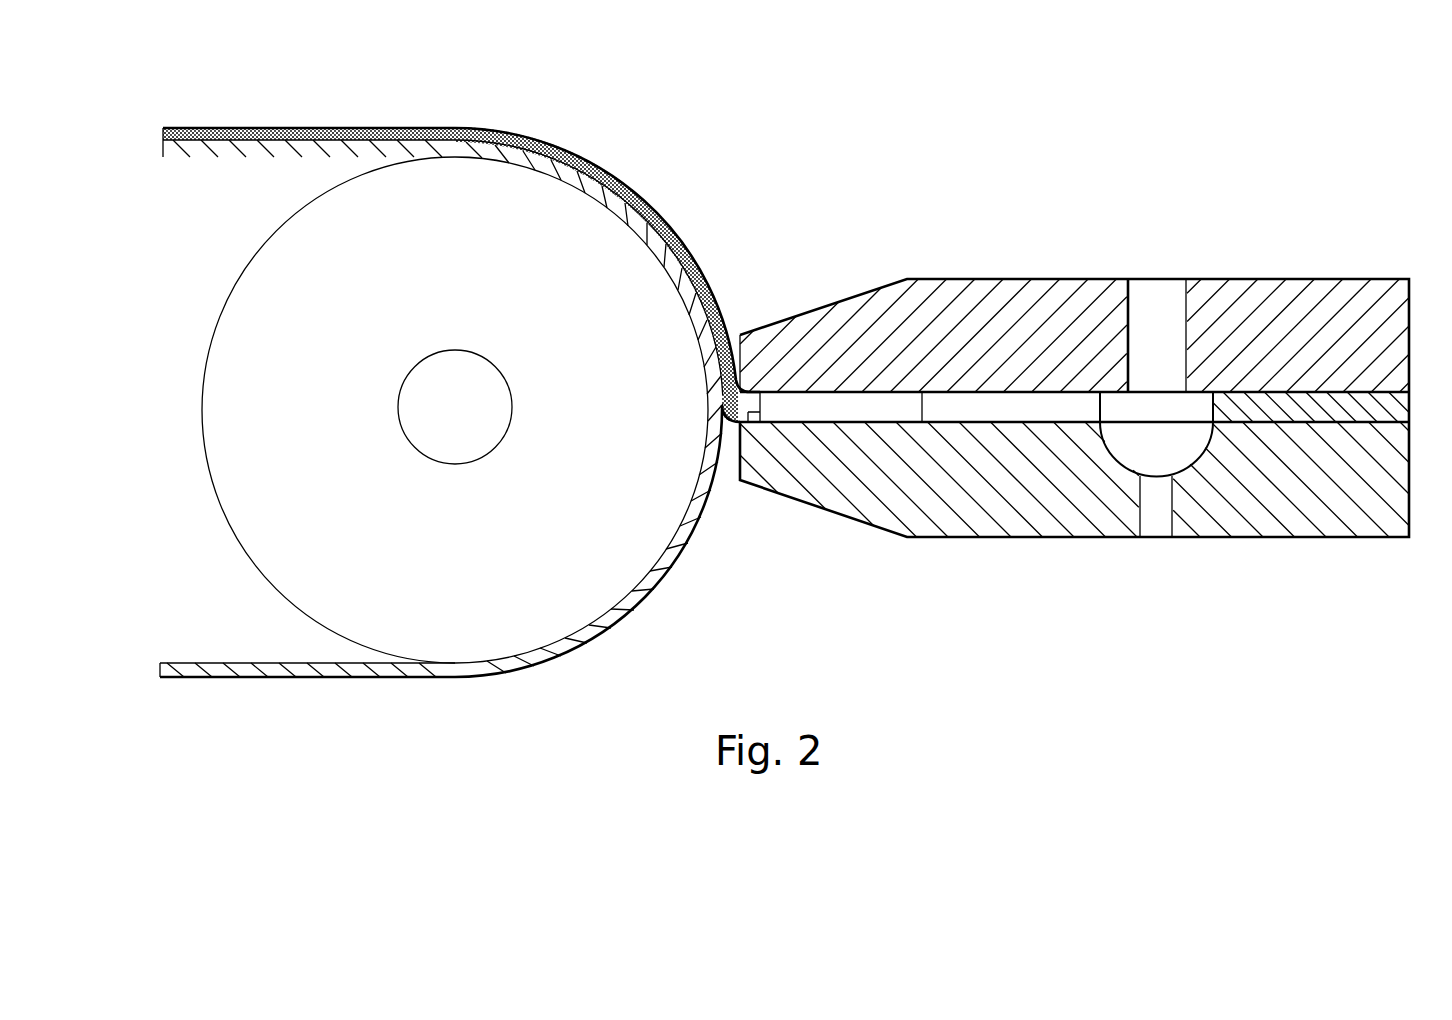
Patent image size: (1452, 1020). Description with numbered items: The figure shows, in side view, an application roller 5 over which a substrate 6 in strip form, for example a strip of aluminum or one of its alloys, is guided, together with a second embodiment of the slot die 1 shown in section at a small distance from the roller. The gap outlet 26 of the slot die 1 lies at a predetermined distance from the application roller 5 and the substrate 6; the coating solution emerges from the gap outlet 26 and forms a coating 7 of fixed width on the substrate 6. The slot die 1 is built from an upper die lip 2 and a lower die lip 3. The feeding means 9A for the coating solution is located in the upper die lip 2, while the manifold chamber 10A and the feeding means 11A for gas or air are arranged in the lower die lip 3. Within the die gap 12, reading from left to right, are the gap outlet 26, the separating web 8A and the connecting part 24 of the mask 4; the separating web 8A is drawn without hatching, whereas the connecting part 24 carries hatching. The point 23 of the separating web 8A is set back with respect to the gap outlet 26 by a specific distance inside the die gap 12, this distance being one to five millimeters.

The slot die 1 is at (1360, 539).
The upper die lip 2 is at (1370, 287).
The lower die lip 3 is at (847, 482).
The mask 4 is at (1282, 407).
The application roller 5 is at (658, 310).
The substrate 6 is at (668, 258).
The coating 7 is at (655, 212).
The separating web 8A is at (962, 407).
The feeding means for the coating solution 9A is at (1160, 288).
The manifold chamber 10A is at (1133, 445).
The feeding means for gas or air 11A is at (1162, 508).
The die gap 12 is at (747, 425).
The point of the separating web 23 is at (752, 388).
The connecting part of the mask 24 is at (1387, 408).
The gap outlet 26 is at (735, 425).